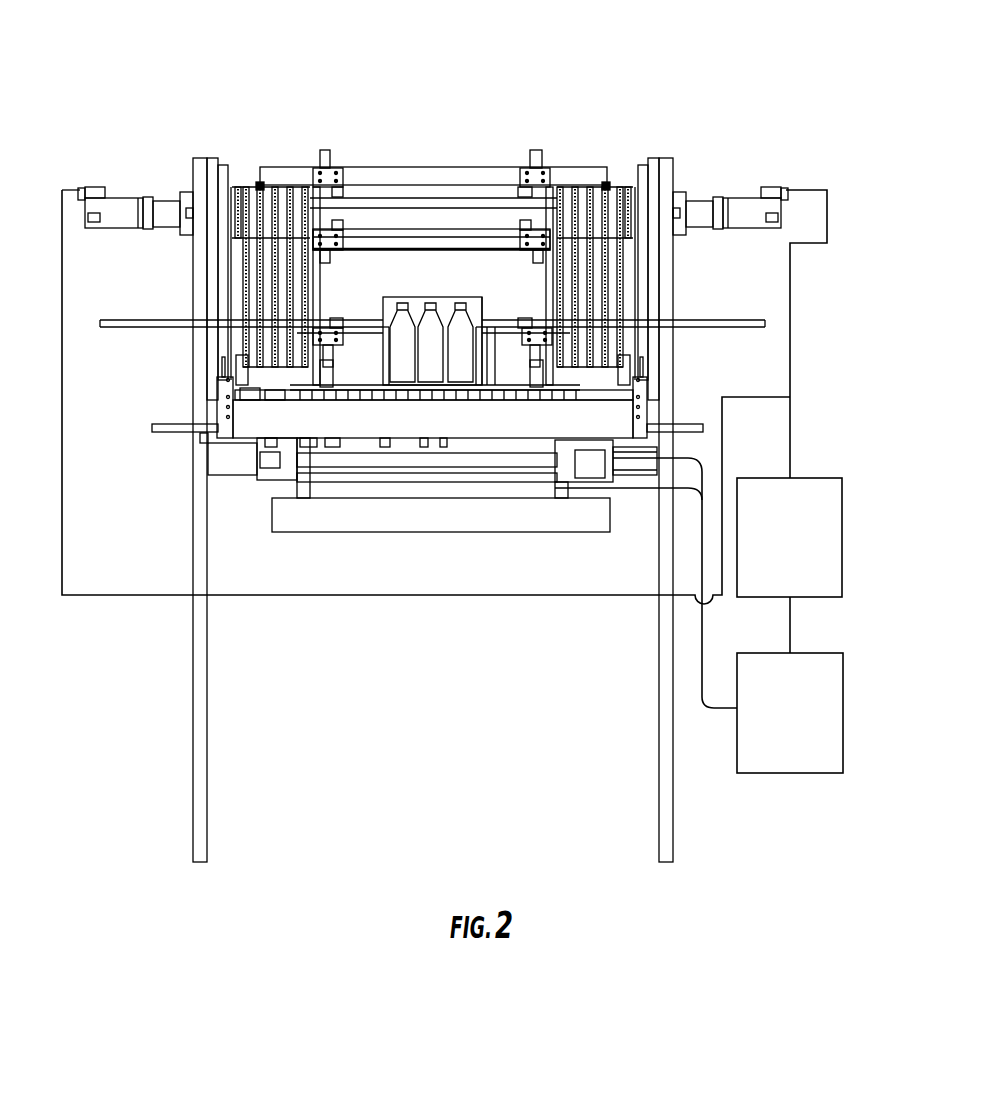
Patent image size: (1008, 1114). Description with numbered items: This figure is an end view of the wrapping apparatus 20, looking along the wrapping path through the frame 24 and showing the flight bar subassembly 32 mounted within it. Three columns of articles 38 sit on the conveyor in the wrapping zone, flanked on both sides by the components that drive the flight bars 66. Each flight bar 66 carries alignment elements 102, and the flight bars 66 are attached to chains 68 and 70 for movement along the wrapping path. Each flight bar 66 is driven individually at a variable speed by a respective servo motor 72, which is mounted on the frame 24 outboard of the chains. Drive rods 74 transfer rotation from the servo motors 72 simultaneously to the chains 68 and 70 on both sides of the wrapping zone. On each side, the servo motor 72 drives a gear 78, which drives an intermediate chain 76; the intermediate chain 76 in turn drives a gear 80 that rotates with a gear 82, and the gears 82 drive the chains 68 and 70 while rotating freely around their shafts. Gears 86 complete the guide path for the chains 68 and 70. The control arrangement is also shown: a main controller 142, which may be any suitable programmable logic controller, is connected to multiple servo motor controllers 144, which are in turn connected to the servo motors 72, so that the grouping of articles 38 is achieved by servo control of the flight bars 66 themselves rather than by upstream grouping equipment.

The apparatus 20 is at (518, 44).
The frame 24 is at (207, 720).
The flight bar subassembly 32 is at (563, 148).
The articles 38 is at (405, 307).
The flight bars 66 is at (358, 167).
The chain 68 is at (612, 188).
The chain 70 is at (252, 190).
The servo motor 72 is at (130, 198).
The drive rods 74 is at (400, 212).
The intermediate chains 76 is at (240, 190).
The gear 78 is at (439, 220).
The gear 80 is at (439, 220).
The gears 82 is at (245, 190).
The gears 86 is at (240, 330).
The alignment elements 102 is at (323, 160).
The main controller 142 is at (808, 663).
The servo motor controllers 144 is at (808, 488).